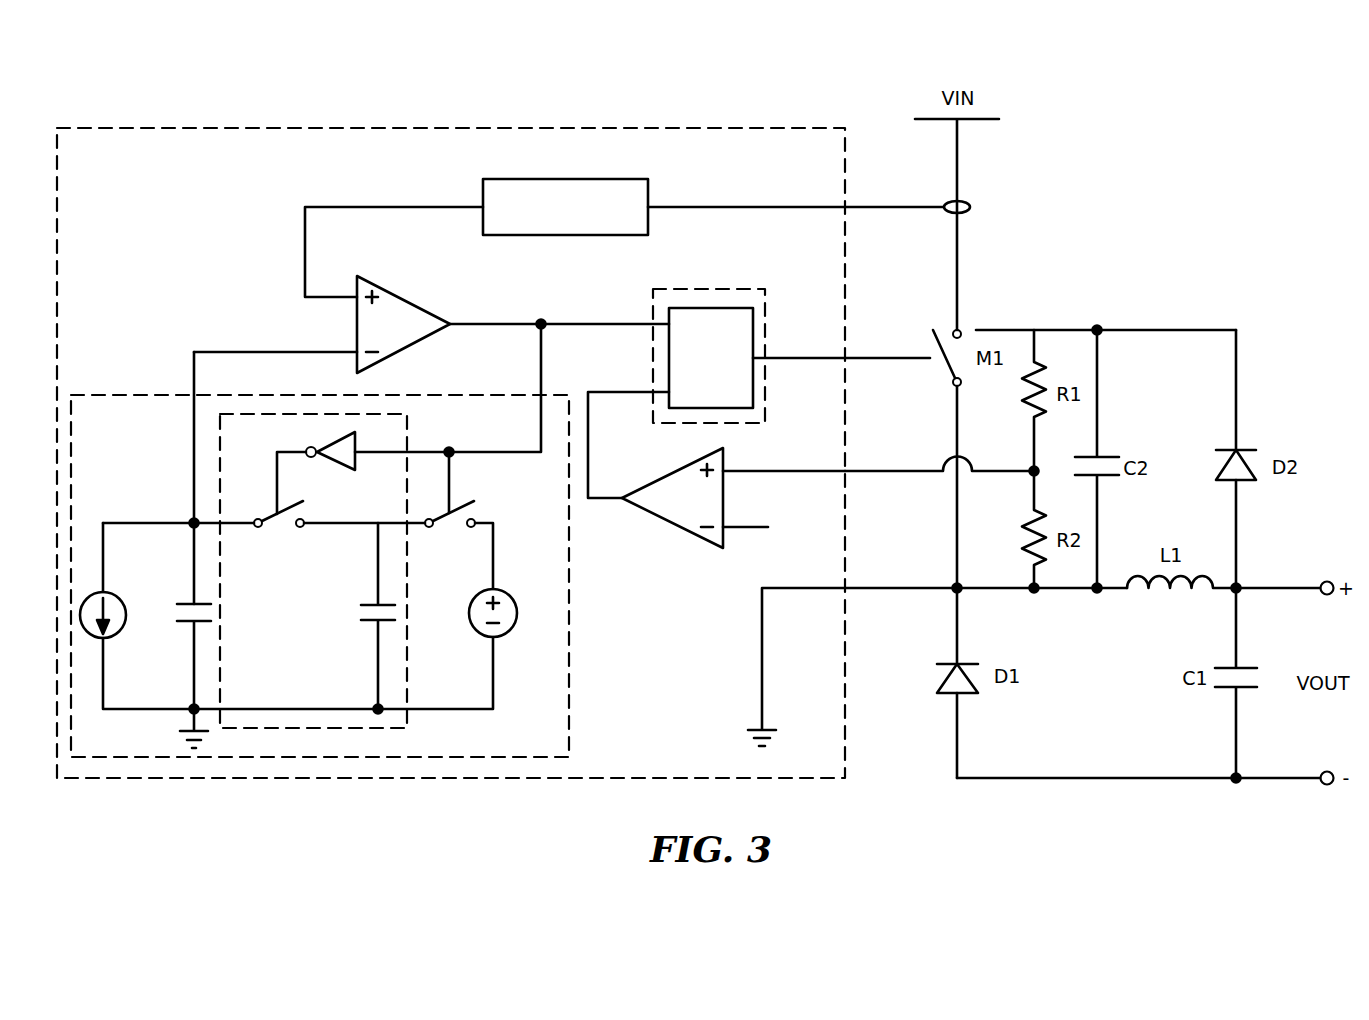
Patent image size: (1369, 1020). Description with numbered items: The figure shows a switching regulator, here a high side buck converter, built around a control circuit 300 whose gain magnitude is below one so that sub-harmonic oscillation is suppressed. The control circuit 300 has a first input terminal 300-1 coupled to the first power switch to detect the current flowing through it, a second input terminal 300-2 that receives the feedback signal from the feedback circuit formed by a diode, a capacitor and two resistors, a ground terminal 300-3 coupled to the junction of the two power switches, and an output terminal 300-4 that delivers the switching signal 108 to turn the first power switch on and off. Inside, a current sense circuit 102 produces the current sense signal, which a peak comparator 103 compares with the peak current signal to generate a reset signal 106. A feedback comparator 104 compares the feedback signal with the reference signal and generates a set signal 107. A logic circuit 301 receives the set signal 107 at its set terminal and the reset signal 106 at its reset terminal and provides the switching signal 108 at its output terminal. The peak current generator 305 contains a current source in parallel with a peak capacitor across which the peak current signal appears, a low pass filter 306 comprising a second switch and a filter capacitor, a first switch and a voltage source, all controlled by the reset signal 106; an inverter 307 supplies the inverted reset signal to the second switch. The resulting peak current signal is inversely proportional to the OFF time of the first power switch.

The control circuit 300 is at (444, 128).
The current sense circuit 102 is at (571, 178).
The peak comparator 103 is at (404, 298).
The feedback comparator 104 is at (674, 470).
The reset signal 106 is at (603, 314).
The set signal 107 is at (628, 432).
The switching signal 108 is at (799, 344).
The logic circuit 301 is at (714, 289).
The peak current generator 305 is at (319, 540).
The low pass filter 306 is at (408, 438).
The inverter 307 is at (348, 469).
The first input terminal 300-1 is at (809, 196).
The second input terminal 300-2 is at (939, 456).
The ground terminal 300-3 is at (852, 652).
The output terminal 300-4 is at (887, 344).